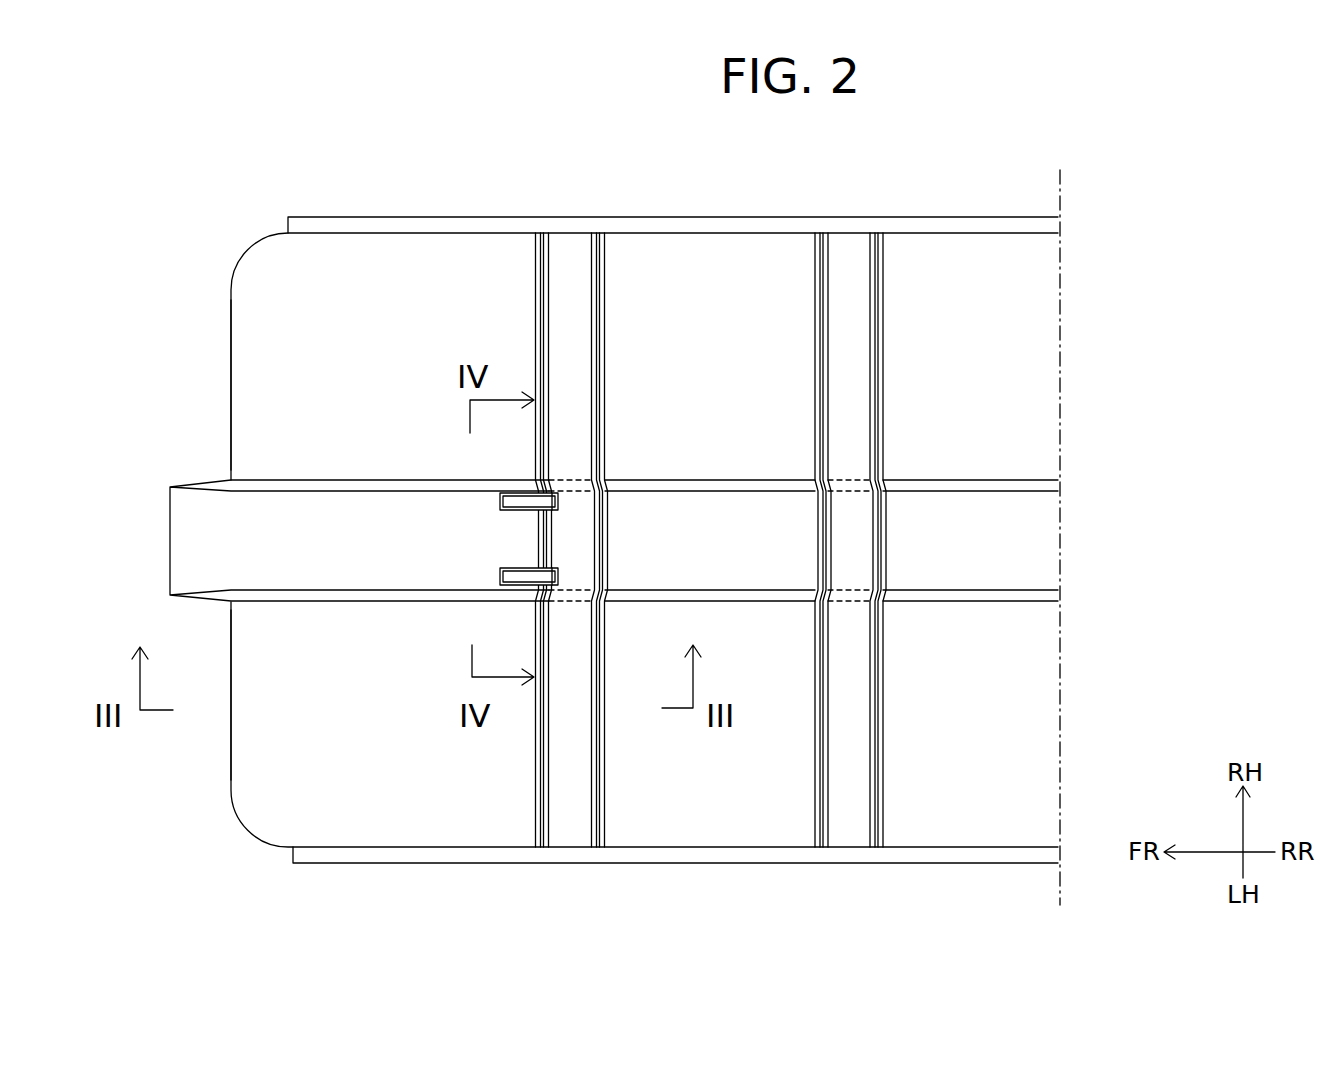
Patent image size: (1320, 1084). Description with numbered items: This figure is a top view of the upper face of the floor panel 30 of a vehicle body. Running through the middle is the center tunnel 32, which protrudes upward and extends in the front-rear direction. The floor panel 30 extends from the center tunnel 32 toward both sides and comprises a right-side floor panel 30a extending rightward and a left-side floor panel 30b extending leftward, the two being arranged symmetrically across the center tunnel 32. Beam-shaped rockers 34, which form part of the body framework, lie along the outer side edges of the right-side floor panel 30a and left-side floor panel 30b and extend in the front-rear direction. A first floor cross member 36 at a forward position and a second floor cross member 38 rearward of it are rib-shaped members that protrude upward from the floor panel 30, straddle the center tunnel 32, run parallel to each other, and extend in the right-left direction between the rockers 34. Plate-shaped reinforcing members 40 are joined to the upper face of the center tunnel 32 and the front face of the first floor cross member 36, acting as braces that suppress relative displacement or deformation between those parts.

The floor panel 30 is at (207, 306).
The right-side floor panel 30a is at (262, 350).
The left-side floor panel 30b is at (262, 787).
The center tunnel 32 is at (188, 540).
The rocker 34 is at (722, 228).
The first floor cross member 36 is at (572, 823).
The second floor cross member 38 is at (857, 823).
The reinforcing member 40 is at (520, 500).